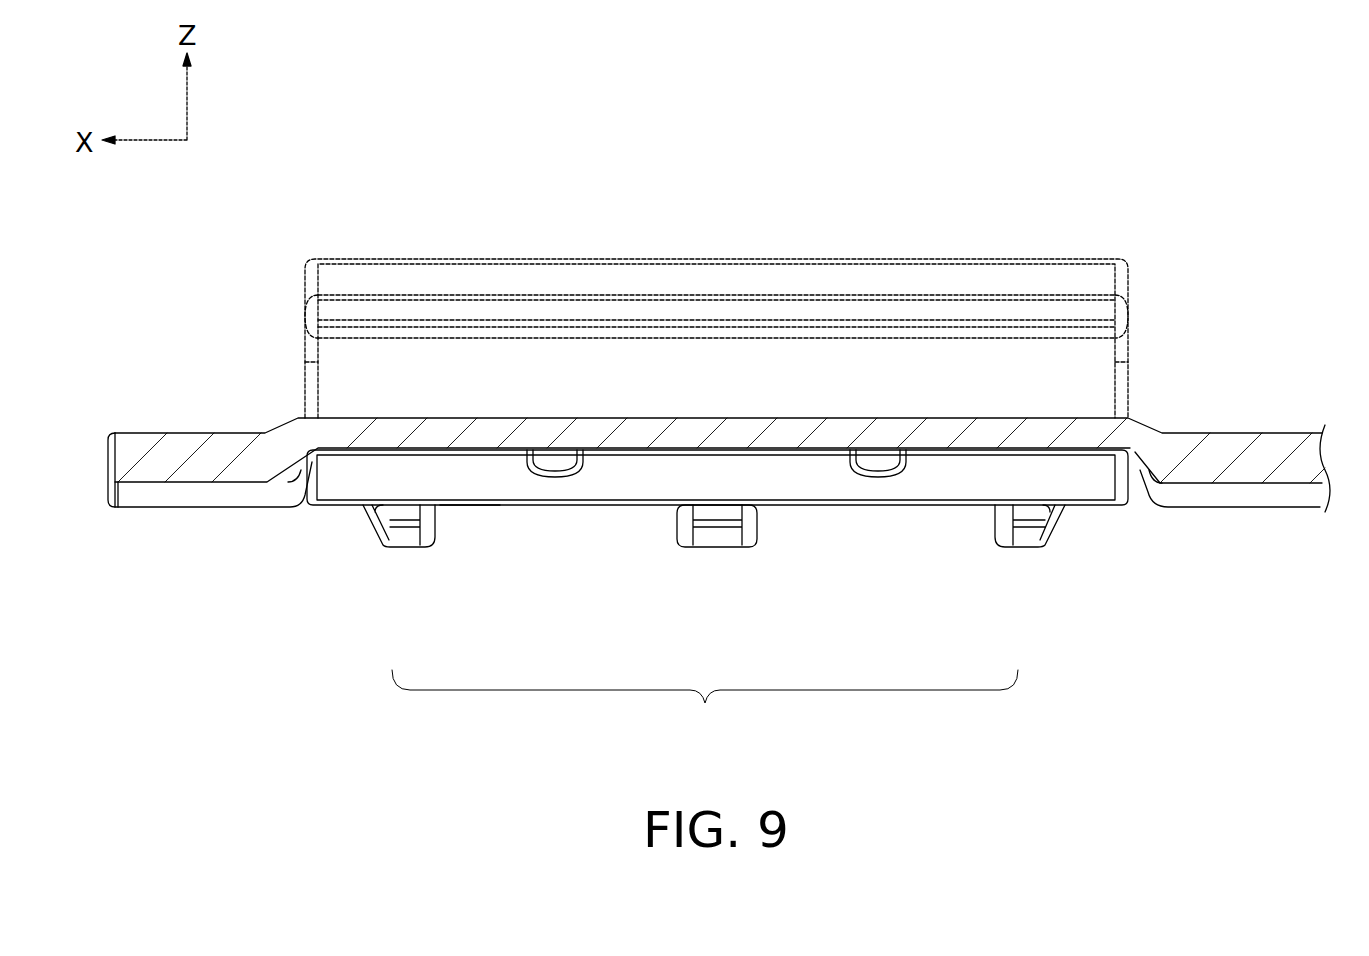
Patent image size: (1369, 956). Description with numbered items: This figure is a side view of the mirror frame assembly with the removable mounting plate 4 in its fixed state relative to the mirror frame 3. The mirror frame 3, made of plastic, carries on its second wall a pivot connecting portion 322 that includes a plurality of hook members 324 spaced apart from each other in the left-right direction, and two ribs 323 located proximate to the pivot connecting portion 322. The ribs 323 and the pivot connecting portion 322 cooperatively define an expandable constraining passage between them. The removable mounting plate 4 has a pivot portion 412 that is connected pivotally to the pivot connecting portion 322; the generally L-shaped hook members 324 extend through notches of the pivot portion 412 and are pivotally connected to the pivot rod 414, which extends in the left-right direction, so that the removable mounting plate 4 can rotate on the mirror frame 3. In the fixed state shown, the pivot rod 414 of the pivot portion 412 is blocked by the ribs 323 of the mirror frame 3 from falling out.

The mirror frame 3 is at (1228, 425).
The removable mounting plate 4 is at (1010, 250).
The pivot connecting portion 322 is at (705, 706).
The rib 323 is at (878, 470).
The hook member 324 is at (1025, 547).
The pivot portion 412 is at (462, 520).
The pivot rod 414 is at (494, 487).